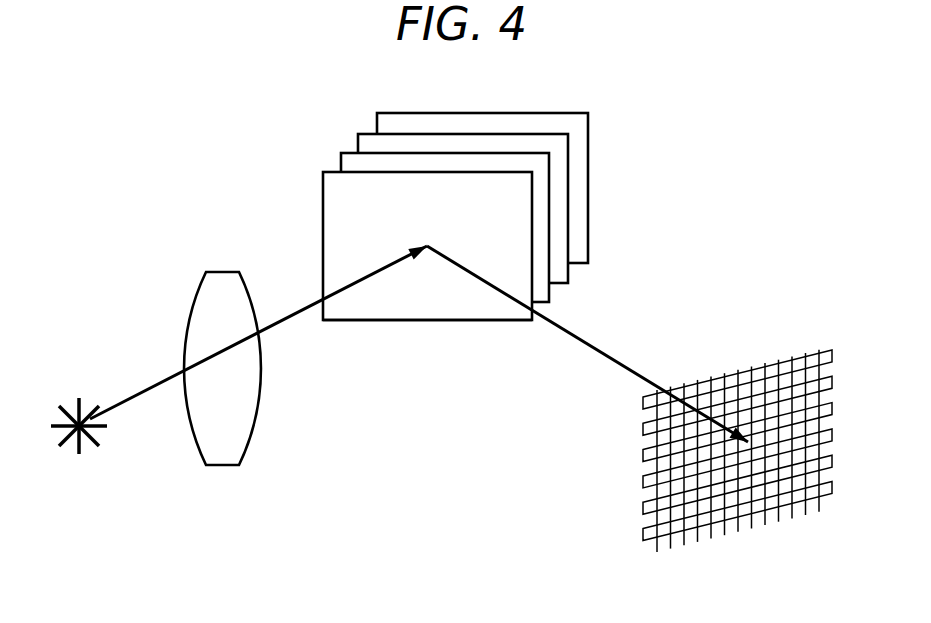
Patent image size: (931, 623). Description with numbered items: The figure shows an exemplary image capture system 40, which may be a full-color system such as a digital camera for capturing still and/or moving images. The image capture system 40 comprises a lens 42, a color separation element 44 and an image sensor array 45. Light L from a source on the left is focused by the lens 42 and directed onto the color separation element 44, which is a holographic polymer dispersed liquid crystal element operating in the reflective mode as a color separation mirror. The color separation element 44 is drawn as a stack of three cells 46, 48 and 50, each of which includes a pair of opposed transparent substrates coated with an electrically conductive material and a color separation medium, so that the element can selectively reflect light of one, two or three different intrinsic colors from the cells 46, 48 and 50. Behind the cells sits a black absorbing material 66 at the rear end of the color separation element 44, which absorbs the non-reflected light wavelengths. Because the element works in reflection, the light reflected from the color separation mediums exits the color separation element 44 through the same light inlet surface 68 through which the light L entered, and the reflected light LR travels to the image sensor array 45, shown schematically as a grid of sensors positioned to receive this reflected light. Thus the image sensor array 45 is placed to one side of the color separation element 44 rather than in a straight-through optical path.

The image capture system 40 is at (632, 165).
The lens 42 is at (233, 438).
The color separation element 44 is at (449, 330).
The image sensor array 45 is at (748, 362).
The cell 46 is at (322, 193).
The cell 48 is at (339, 163).
The cell 50 is at (357, 143).
The black absorbing material 66 is at (421, 112).
The light inlet surface 68 is at (363, 316).